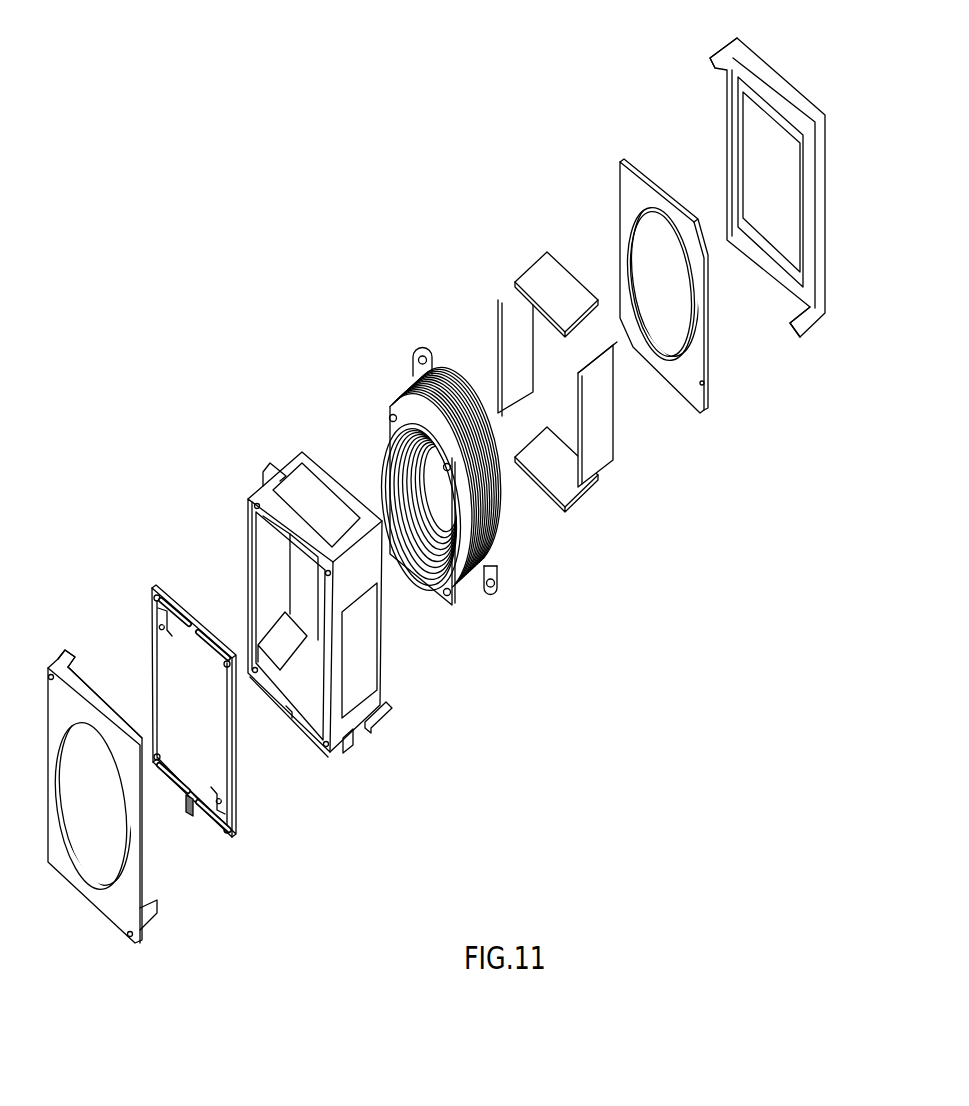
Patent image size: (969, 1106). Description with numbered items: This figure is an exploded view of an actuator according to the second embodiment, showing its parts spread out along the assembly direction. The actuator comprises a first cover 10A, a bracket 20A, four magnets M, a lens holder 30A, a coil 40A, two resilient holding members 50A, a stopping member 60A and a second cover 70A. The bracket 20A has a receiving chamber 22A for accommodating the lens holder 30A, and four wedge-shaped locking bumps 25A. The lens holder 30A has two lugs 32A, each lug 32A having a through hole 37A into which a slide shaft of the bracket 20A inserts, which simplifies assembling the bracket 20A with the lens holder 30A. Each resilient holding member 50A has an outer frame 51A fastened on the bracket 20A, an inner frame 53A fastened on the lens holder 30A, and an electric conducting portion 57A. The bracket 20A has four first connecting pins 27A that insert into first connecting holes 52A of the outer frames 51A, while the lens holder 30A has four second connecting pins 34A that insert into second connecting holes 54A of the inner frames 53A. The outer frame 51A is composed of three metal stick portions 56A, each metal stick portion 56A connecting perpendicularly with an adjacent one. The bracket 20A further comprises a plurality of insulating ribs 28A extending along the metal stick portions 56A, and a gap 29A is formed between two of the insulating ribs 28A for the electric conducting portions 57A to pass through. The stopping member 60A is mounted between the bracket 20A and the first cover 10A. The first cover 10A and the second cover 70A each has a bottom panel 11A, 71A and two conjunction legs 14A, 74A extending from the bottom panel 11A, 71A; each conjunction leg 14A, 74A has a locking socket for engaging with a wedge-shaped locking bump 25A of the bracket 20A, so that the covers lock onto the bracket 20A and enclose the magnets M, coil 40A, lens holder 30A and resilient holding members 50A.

The first cover 10A is at (738, 202).
The bottom panel 11A is at (787, 118).
The conjunction legs 14A is at (710, 70).
The bracket 20A is at (303, 587).
The receiving chamber 22A is at (323, 627).
The wedge-shaped locking bumps 25A is at (345, 742).
The first connecting pins 27A is at (262, 478).
The insulating ribs 28A is at (255, 550).
The gap 29A is at (290, 714).
The lens holder 30A is at (450, 488).
The lugs 32A is at (498, 577).
The second connecting pins 34A is at (391, 418).
The through hole 37A is at (490, 597).
The coil 40A is at (449, 376).
The resilient holding members 50A is at (191, 705).
The outer frame 51A is at (150, 613).
The first connecting holes 52A is at (152, 757).
The inner frame 53A is at (158, 616).
The second connecting holes 54A is at (217, 800).
The metal stick portions 56A is at (174, 623).
The electric conducting portion 57A is at (194, 820).
The stopping member 60A is at (613, 145).
The second cover 70A is at (105, 773).
The bottom panel 71A is at (56, 855).
The conjunction legs 74A is at (70, 648).
The magnets M is at (595, 458).